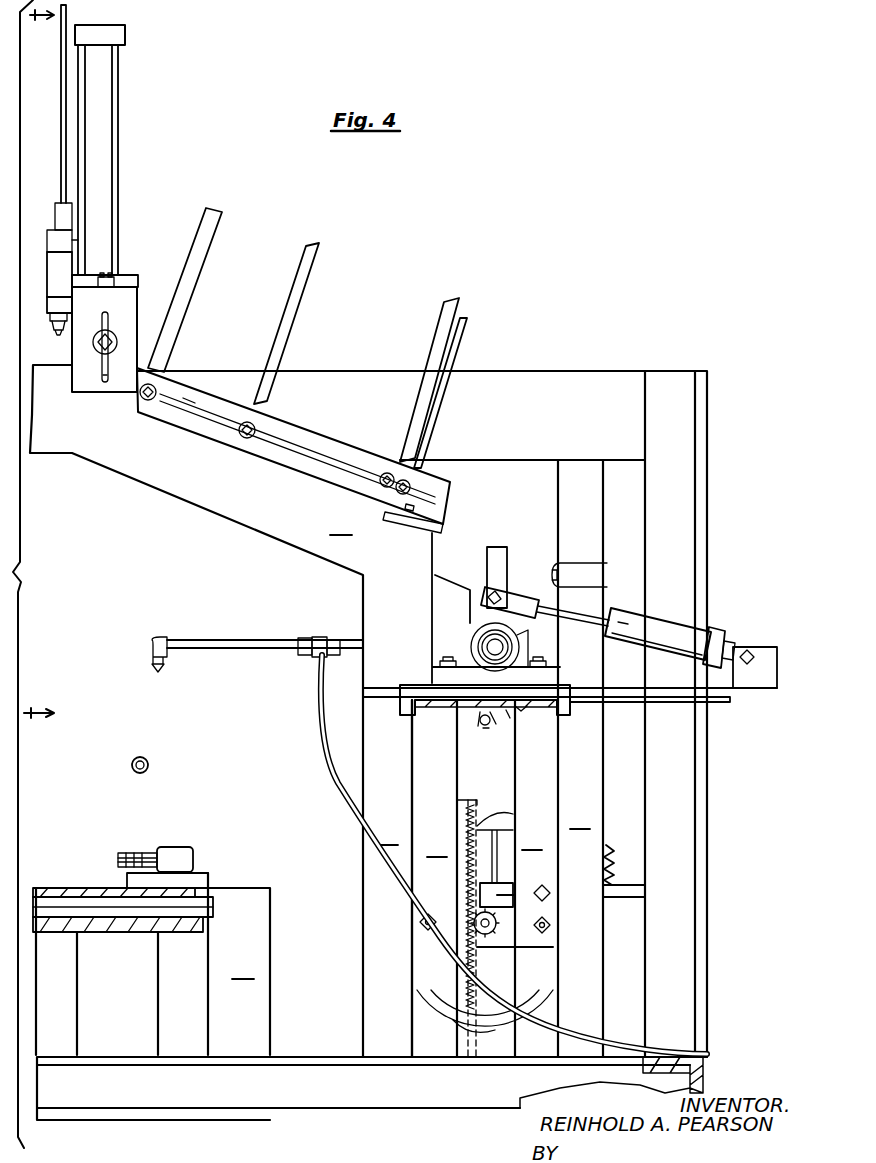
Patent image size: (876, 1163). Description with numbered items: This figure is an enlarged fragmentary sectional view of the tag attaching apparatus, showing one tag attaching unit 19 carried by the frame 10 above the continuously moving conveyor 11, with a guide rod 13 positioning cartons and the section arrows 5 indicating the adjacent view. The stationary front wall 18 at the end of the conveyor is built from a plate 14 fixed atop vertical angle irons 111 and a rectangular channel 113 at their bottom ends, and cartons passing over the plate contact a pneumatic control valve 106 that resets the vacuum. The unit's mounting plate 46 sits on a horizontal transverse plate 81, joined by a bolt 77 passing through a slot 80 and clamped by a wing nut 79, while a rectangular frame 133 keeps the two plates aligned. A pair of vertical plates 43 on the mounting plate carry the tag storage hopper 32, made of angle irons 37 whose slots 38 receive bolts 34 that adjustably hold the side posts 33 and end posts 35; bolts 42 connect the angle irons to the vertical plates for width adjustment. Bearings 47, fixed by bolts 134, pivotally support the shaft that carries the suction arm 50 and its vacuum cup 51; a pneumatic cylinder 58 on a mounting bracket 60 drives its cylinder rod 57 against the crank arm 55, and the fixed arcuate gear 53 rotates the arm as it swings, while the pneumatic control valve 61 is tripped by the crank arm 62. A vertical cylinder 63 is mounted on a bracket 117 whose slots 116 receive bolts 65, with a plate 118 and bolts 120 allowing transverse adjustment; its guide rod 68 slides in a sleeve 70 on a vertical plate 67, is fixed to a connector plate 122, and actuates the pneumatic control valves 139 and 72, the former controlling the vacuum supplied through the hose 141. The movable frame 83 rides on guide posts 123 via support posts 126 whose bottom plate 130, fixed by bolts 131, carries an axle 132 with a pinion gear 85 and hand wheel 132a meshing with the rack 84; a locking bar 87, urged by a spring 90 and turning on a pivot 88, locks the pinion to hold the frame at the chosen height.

The section line indicator (FIG. 5 view direction) 5 is at (48, 367).
The frame 10 is at (629, 369).
The conveyor 11 is at (75, 893).
The guide rod 13 is at (146, 763).
The plate 14 is at (50, 888).
The front wall 18 is at (248, 885).
The tag attaching unit 19 is at (284, 549).
The tag storage hopper 32 is at (303, 427).
The side post 33 is at (317, 257).
The bolt 34 is at (148, 401).
The end post 35 is at (202, 240).
The angle iron 37 is at (273, 450).
The slot 38 is at (186, 400).
The bolt 42 is at (445, 514).
The vertical plate 43 is at (339, 525).
The mounting plate 46 is at (717, 700).
The bearing 47 is at (523, 647).
The suction arm 50 is at (272, 648).
The vacuum cup 51 is at (157, 672).
The arcuate gear 53 is at (440, 590).
The crank arm 55 is at (495, 590).
The cylinder rod 57 is at (545, 606).
The pneumatic cylinder 58 is at (697, 640).
The mounting bracket 60 is at (753, 682).
The pneumatic control valve 61 is at (593, 577).
The crank arm 62 is at (503, 557).
The vertical cylinder 63 is at (88, 154).
The bolt 65 is at (97, 348).
The vertical plate 67 is at (77, 247).
The guide rod 68 is at (62, 82).
The sleeve 70 is at (55, 303).
The pneumatic control valve 72 is at (55, 270).
The bolt 77 is at (483, 718).
The wing nut 79 is at (478, 719).
The slot 80 is at (520, 708).
The transverse plate 81 is at (508, 713).
The movable frame 83 is at (425, 794).
The rack 84 is at (468, 982).
The pinion gear 85 is at (500, 932).
The locking bar 87 is at (627, 890).
The pivot 88 is at (549, 890).
The spring 90 is at (612, 860).
The pneumatic control valve 106 is at (182, 857).
The vertical angle iron 111 is at (243, 969).
The rectangular channel 113 is at (240, 1117).
The slot 116 is at (105, 378).
The bracket 117 is at (128, 308).
The plate 118 is at (127, 276).
The bolt 120 is at (105, 278).
The connector plate 122 is at (52, 314).
The guide post 123 is at (484, 758).
The support post 126 is at (510, 758).
The plate 130 is at (503, 947).
The bolt 131 is at (422, 925).
The axle 132 is at (492, 922).
The hand wheel 132a is at (492, 1027).
The rectangular frame 133 is at (567, 712).
The bolt 134 is at (440, 662).
The pneumatic control valve 139 is at (48, 233).
The hose 141 is at (330, 762).